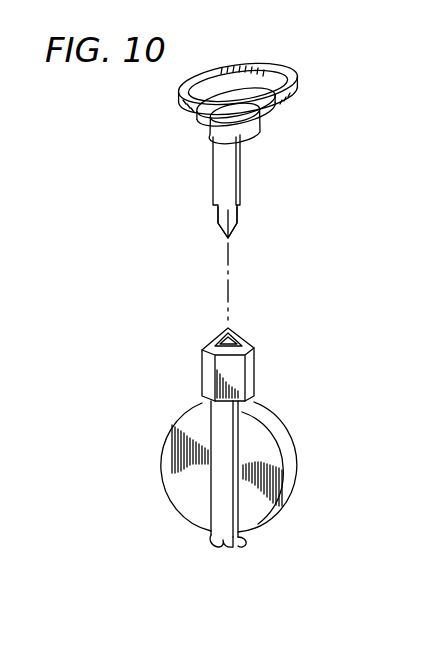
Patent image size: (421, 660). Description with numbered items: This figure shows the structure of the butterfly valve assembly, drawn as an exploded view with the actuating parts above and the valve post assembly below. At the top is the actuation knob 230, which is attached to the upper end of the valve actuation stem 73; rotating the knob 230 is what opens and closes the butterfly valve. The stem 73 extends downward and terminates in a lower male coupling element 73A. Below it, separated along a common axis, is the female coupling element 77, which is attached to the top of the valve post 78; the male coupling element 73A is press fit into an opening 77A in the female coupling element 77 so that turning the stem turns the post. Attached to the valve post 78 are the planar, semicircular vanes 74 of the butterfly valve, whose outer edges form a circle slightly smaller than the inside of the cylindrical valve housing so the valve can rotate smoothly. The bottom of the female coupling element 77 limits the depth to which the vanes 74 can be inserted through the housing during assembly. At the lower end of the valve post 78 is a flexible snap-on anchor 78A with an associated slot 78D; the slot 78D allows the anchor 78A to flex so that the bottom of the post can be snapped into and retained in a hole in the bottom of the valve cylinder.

The actuation knob 230 is at (238, 64).
The valve actuation stem 73 is at (221, 172).
The male coupling element 73A is at (221, 216).
The female coupling element 77 is at (202, 370).
The opening in female coupling element 77A is at (233, 338).
The vanes 74 is at (273, 425).
The valve post 78 is at (217, 497).
The slot 78D is at (222, 549).
The flexible snap-on anchor 78A is at (242, 541).